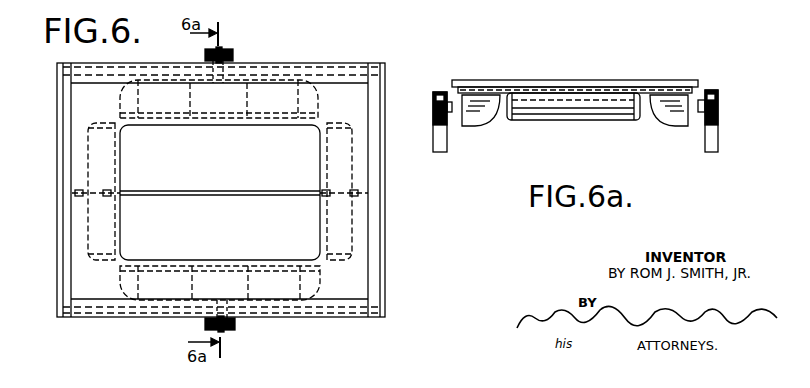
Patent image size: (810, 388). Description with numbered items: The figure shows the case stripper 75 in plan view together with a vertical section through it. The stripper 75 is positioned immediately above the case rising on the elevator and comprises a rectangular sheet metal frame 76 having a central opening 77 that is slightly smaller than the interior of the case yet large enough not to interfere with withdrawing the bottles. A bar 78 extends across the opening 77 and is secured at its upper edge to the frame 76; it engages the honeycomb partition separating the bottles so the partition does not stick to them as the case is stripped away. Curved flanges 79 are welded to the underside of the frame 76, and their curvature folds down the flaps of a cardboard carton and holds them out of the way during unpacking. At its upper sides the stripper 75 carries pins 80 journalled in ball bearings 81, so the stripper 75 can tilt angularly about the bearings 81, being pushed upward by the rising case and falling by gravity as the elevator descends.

In FIG. 6, the case stripper 75 is at (390, 233).
In FIG. 6, the rectangular sheet metal frame 76 is at (378, 279).
In FIG. 6A, the rectangular sheet metal frame 76 is at (605, 81).
In FIG. 6, the central opening 77 is at (305, 137).
In FIG. 6, the bar 78 is at (210, 190).
In FIG. 6, the curved flanges 79 is at (302, 78).
In FIG. 6A, the curved flanges 79 is at (490, 124).
In FIG. 6, the pins 80 is at (233, 50).
In FIG. 6A, the pins 80 is at (432, 110).
In FIG. 6, the ball bearings 81 is at (205, 54).
In FIG. 6A, the ball bearings 81 is at (440, 92).